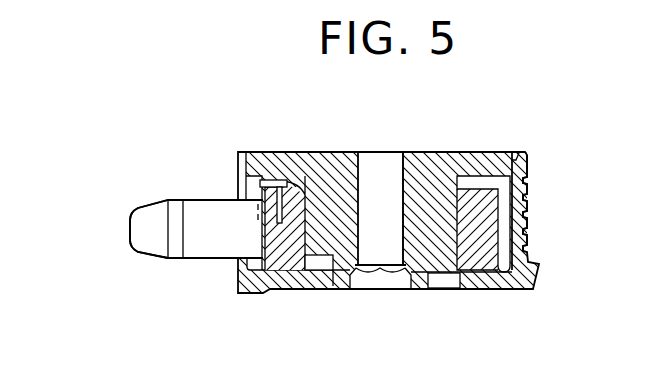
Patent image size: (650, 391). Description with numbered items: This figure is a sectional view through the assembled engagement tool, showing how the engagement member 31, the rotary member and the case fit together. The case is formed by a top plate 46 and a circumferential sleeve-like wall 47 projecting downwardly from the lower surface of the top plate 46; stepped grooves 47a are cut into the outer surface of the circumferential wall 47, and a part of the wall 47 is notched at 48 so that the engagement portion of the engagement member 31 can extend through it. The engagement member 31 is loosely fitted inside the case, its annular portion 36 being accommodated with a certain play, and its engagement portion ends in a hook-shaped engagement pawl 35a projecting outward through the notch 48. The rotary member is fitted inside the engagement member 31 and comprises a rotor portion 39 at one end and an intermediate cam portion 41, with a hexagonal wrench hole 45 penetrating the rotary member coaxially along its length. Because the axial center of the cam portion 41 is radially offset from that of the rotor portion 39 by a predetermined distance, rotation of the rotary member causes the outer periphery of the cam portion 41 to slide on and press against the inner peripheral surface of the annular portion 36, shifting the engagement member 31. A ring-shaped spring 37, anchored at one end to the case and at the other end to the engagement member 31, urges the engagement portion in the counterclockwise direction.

The engagement member 31 is at (203, 210).
The engagement pawl 35a is at (161, 248).
The annular portion 36 is at (447, 253).
The ring-shaped spring 37 is at (298, 180).
The rotor portion 39 is at (477, 160).
The cam portion 41 is at (497, 268).
The wrench hole 45 is at (370, 254).
The top plate 46 is at (483, 284).
The circumferential wall 47 is at (520, 226).
The stepped grooves 47a is at (528, 187).
The notch 48 is at (245, 183).